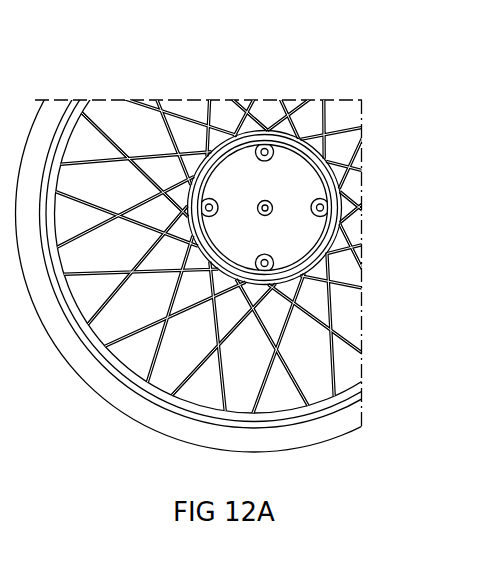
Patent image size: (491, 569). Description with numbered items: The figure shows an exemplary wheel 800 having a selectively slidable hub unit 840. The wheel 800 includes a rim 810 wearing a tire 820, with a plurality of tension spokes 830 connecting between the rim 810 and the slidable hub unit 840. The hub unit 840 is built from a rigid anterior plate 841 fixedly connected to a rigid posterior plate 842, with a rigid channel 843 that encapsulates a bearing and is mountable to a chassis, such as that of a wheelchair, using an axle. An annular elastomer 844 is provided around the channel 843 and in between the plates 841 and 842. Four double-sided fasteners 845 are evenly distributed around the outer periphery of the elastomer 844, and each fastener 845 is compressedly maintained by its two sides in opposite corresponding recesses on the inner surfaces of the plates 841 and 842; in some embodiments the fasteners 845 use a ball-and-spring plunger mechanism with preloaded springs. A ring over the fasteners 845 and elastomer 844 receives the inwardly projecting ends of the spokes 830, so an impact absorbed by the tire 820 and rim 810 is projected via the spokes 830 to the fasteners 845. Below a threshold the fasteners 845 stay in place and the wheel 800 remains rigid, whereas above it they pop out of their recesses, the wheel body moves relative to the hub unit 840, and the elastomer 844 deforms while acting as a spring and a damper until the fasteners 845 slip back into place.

The wheel 800 is at (136, 86).
The rim 810 is at (325, 402).
The tire 820 is at (115, 412).
The tension spokes 830 is at (187, 97).
The slidable hub unit 840 is at (326, 67).
The anterior plate 841 is at (229, 119).
The posterior plate 842 is at (358, 177).
The channel 843 is at (343, 250).
The annular elastomer 844 is at (270, 213).
The double-sided fasteners 845 is at (283, 245).